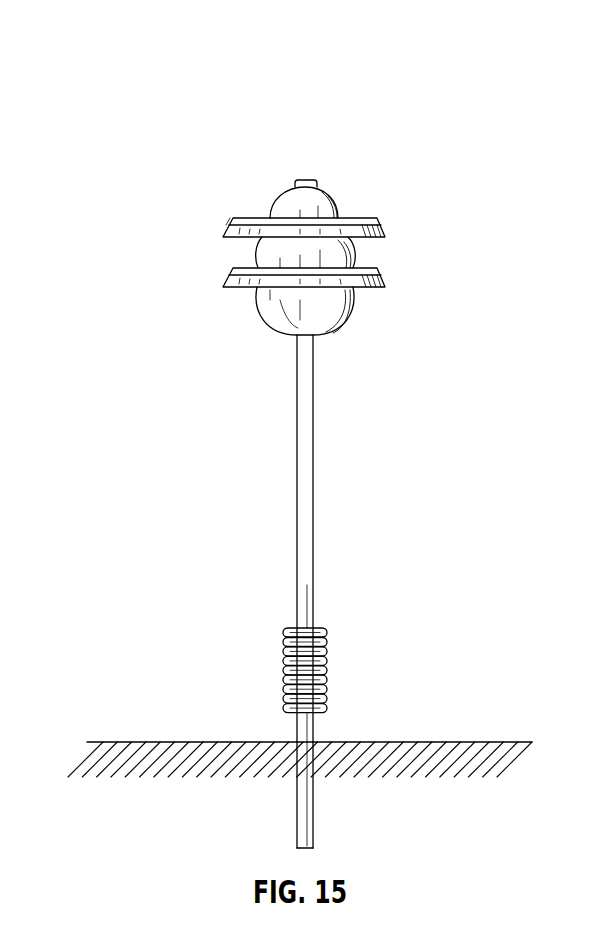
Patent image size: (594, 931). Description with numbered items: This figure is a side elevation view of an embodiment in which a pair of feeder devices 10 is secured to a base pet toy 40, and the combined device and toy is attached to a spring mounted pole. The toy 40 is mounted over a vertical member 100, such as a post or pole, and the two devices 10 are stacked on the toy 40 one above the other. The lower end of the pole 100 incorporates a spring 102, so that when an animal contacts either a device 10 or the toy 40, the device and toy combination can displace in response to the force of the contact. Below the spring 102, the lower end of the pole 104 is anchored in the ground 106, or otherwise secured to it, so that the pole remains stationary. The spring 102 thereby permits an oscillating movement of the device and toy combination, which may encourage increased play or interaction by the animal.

The toy 40 is at (345, 198).
The device 10 is at (396, 223).
The vertical member 100 is at (317, 472).
The spring 102 is at (328, 652).
The lower end of the pole 104 is at (315, 820).
The ground 106 is at (408, 741).